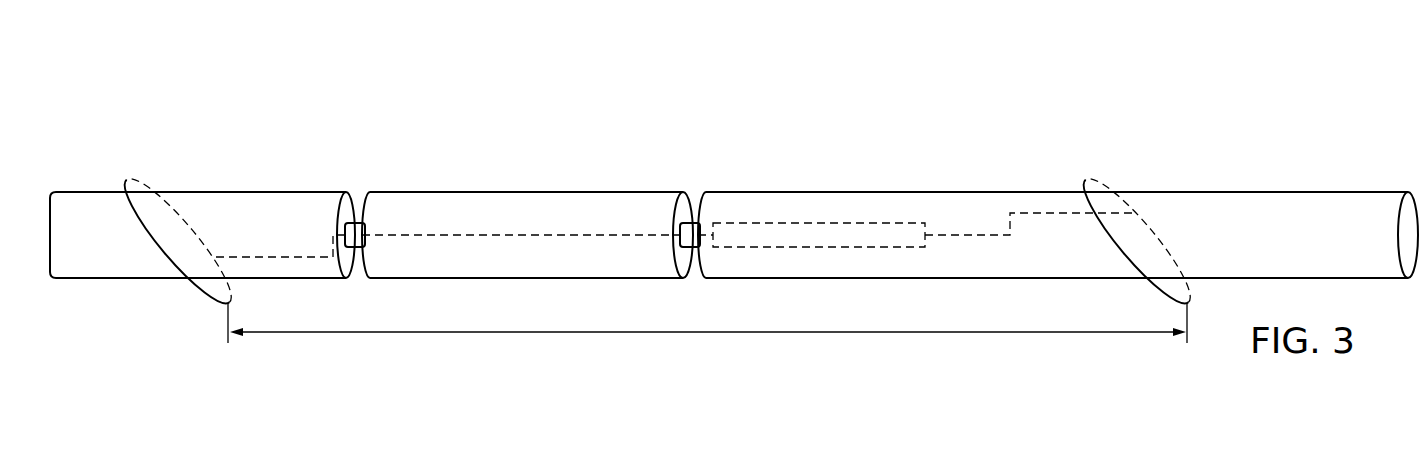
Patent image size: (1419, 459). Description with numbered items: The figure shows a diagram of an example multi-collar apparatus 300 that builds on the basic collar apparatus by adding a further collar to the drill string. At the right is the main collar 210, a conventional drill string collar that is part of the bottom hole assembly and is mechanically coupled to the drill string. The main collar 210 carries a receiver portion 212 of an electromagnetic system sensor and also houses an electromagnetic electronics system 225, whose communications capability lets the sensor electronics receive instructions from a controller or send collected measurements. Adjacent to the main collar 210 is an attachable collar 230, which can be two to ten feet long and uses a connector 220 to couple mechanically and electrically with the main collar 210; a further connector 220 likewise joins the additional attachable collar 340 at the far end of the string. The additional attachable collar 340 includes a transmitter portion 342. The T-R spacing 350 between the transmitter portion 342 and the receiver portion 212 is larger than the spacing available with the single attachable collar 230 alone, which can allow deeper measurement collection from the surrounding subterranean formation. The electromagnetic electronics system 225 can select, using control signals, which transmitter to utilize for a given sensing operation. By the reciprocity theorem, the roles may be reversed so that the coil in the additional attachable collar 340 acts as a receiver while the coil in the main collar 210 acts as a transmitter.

The multi-collar apparatus 300 is at (492, 83).
The main collar 210 is at (1258, 190).
The receiver portion 212 is at (1087, 178).
The connector 220 is at (673, 227).
The electromagnetic electronics system 225 is at (818, 223).
The attachable collar 230 is at (530, 190).
The additional attachable collar 340 is at (243, 190).
The transmitter portion 342 is at (130, 178).
The T-R spacing 350 is at (708, 332).